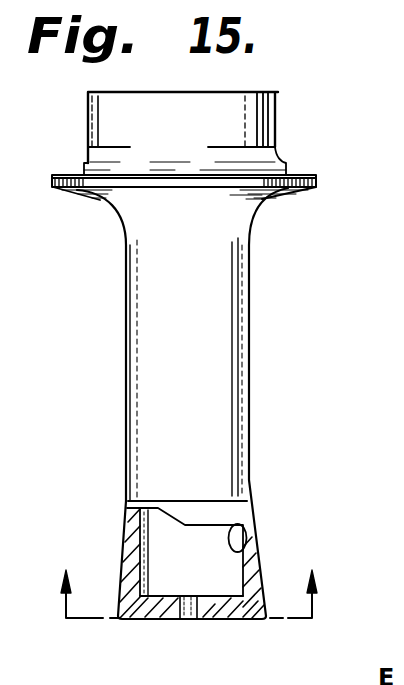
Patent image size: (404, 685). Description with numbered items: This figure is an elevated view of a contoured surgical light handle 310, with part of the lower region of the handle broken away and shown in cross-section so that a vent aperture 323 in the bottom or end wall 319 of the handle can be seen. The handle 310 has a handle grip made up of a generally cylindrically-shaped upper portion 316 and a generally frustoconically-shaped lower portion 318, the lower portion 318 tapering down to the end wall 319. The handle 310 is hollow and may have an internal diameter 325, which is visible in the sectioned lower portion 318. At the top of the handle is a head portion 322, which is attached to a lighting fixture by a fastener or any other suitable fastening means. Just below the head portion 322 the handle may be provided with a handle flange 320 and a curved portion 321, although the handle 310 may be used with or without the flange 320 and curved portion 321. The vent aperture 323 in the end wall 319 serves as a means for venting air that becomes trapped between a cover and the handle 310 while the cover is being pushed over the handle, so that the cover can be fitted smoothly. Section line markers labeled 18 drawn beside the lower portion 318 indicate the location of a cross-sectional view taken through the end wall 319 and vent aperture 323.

The contoured surgical light handle 310 is at (264, 328).
The upper portion 316 is at (145, 342).
The lower portion 318 is at (125, 540).
The end wall 319 is at (147, 608).
The handle flange 320 is at (53, 190).
The curved portion 321 is at (258, 195).
The head portion 322 is at (247, 105).
The vent aperture 323 is at (186, 621).
The internal diameter 325 is at (246, 512).
The section line 18- 18 is at (191, 575).